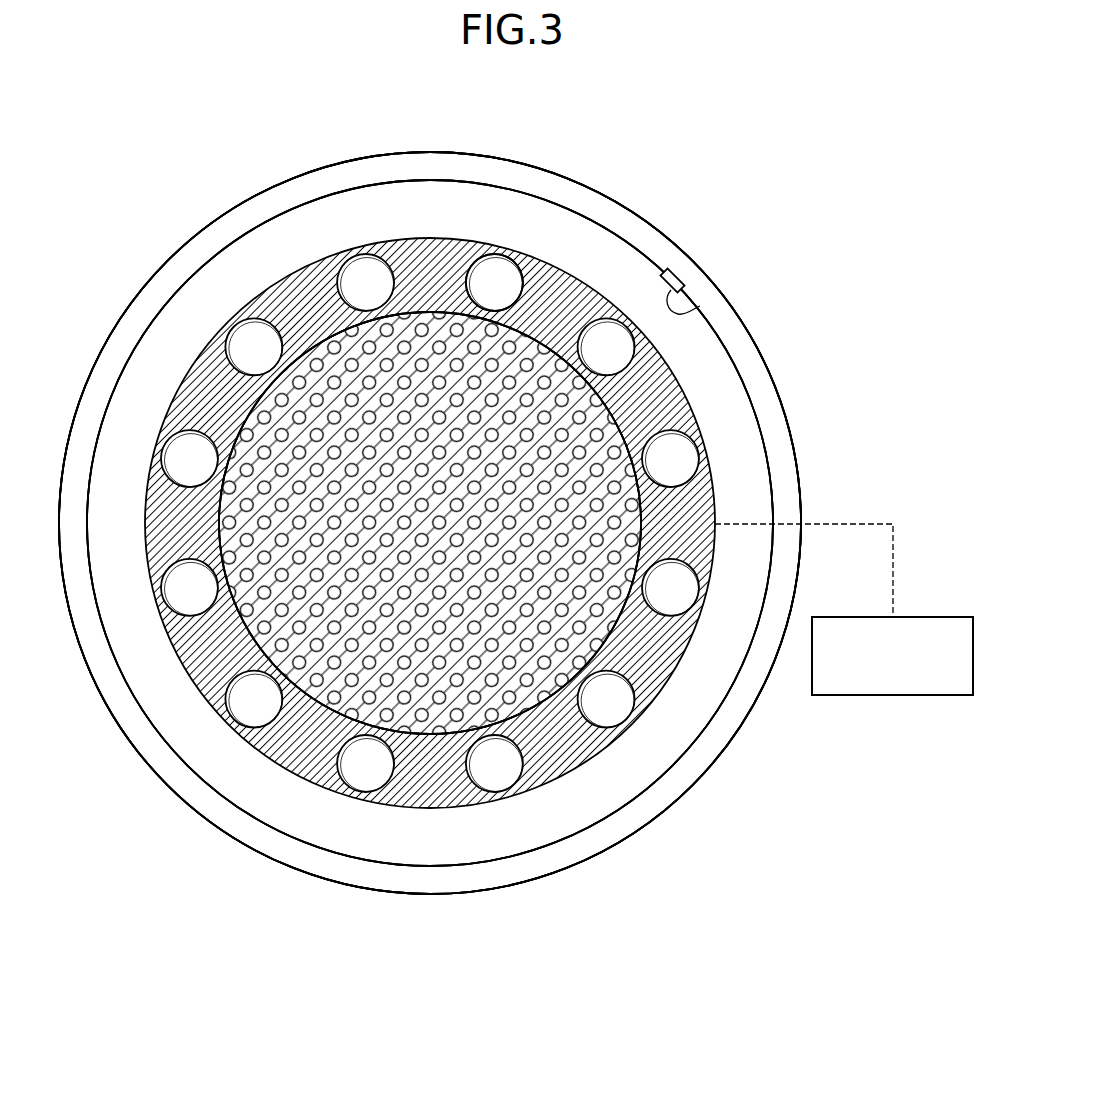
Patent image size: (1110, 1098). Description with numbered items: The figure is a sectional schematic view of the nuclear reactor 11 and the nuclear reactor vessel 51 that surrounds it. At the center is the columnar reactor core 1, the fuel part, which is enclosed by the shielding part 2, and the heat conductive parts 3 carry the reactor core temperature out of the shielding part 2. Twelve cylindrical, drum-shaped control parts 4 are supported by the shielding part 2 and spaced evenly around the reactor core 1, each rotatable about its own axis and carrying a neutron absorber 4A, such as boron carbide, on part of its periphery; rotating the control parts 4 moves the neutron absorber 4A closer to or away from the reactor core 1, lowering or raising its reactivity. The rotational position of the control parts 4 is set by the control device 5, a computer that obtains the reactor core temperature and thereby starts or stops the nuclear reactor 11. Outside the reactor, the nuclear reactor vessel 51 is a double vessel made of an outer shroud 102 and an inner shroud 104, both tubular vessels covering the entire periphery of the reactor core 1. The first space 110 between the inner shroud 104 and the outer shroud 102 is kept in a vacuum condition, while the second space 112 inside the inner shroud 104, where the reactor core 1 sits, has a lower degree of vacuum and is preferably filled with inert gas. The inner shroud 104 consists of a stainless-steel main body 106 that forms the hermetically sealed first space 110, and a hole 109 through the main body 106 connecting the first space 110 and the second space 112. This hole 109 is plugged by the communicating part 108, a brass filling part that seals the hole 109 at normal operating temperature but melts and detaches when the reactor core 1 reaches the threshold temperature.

The reactor core 1 is at (552, 688).
The shielding part 2 is at (660, 395).
The heat conductive parts 3 is at (443, 733).
The control parts 4 is at (364, 275).
The neutron absorber 4A is at (481, 300).
The control device 5 is at (945, 616).
The nuclear reactor 11 is at (674, 226).
The nuclear reactor vessel 51 is at (746, 132).
The outer shroud 102 is at (548, 170).
The inner shroud 104 is at (588, 220).
The main body 106 is at (732, 360).
The communicating part 108 is at (679, 276).
The hole 109 is at (700, 306).
The first space 110 is at (658, 802).
The second space 112 is at (548, 820).